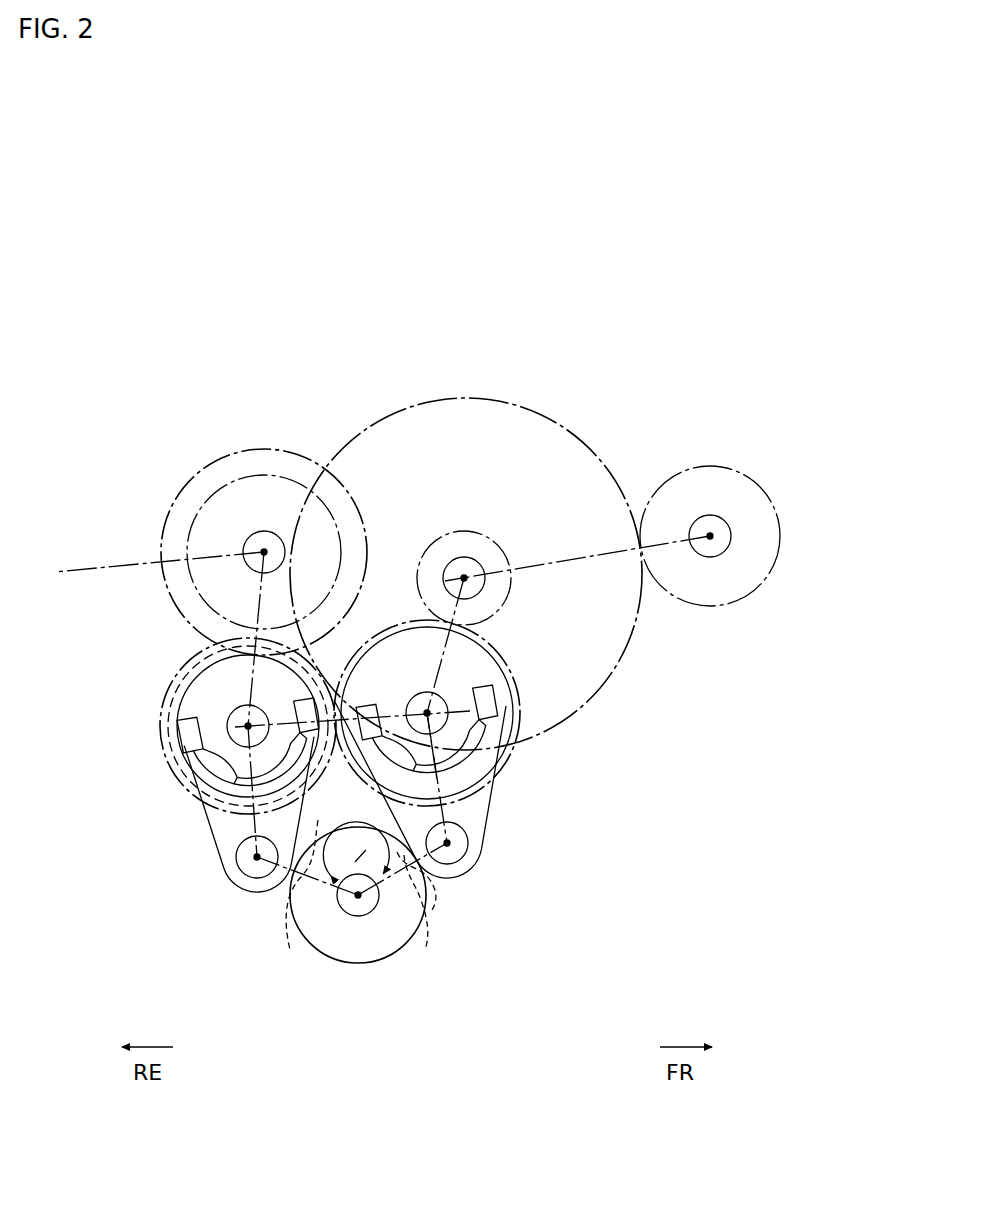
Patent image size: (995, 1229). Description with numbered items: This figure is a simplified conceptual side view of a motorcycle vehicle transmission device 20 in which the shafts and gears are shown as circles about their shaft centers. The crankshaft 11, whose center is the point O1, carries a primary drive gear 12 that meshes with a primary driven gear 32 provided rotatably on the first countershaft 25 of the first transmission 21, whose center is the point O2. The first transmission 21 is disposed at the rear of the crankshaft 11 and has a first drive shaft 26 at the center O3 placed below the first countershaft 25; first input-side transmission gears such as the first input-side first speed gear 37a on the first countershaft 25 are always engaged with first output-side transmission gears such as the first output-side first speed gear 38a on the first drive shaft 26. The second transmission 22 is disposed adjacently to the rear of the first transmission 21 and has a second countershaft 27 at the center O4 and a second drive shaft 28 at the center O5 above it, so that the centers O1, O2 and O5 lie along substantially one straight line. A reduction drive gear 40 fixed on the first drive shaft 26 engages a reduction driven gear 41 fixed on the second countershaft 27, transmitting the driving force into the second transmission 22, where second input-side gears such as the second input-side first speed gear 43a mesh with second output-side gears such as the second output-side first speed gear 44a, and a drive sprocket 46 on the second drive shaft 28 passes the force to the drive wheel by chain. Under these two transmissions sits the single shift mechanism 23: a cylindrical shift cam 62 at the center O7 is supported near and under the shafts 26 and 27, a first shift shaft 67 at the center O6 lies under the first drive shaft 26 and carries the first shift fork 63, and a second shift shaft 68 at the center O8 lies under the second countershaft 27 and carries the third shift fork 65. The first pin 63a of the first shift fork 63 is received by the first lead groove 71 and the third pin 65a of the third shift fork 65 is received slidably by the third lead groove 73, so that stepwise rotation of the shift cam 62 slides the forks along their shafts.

The transmission device 20 is at (450, 315).
The first transmission 21 is at (530, 392).
The second transmission 22 is at (295, 435).
The single shift mechanism 23 is at (347, 968).
The first countershaft 25 is at (432, 548).
The first drive shaft 26 is at (440, 702).
The second countershaft 27 is at (262, 718).
The second drive shaft 28 is at (263, 533).
The primary driven gear 32 is at (560, 422).
The primary drive gear 12 is at (735, 470).
The crankshaft 11 is at (712, 519).
The center of the crankshaft O1 is at (710, 536).
The center of the first countershaft O2 is at (464, 578).
The center of the first drive shaft O3 is at (427, 713).
The center of the second countershaft O4 is at (248, 726).
The center of the second drive shaft O5 is at (264, 552).
The center of the first shift shaft O6 is at (358, 895).
The center of the shift cam O7 is at (447, 843).
The center of the second shift shaft O8 is at (257, 857).
The first input-side first speed gear 37a is at (508, 598).
The first output-side first speed gear 38a is at (507, 667).
The reduction drive gear 40 is at (520, 713).
The reduction driven gear 41 is at (162, 712).
The second input-side first speed gear 43a is at (186, 668).
The second output-side first speed gear 44a is at (206, 470).
The drive sprocket 46 is at (192, 526).
The shift cam 62 is at (323, 957).
The first shift fork 63 is at (489, 808).
The first pin 63a is at (427, 893).
The third shift fork 65 is at (208, 832).
The third pin 65a is at (297, 835).
The first shift shaft 67 is at (483, 848).
The second shift shaft 68 is at (227, 875).
The first lead groove 71 is at (440, 955).
The third lead groove 73 is at (291, 942).